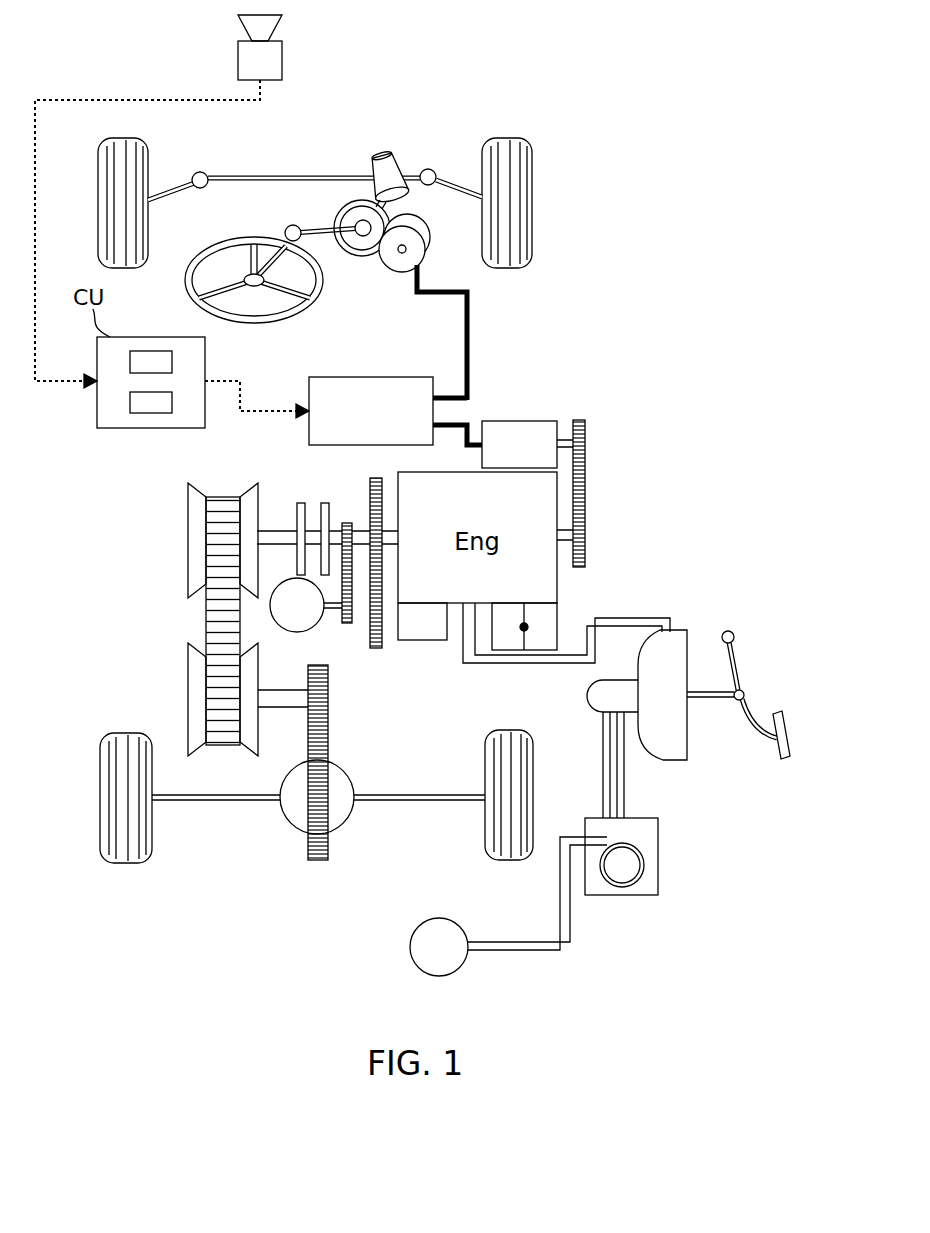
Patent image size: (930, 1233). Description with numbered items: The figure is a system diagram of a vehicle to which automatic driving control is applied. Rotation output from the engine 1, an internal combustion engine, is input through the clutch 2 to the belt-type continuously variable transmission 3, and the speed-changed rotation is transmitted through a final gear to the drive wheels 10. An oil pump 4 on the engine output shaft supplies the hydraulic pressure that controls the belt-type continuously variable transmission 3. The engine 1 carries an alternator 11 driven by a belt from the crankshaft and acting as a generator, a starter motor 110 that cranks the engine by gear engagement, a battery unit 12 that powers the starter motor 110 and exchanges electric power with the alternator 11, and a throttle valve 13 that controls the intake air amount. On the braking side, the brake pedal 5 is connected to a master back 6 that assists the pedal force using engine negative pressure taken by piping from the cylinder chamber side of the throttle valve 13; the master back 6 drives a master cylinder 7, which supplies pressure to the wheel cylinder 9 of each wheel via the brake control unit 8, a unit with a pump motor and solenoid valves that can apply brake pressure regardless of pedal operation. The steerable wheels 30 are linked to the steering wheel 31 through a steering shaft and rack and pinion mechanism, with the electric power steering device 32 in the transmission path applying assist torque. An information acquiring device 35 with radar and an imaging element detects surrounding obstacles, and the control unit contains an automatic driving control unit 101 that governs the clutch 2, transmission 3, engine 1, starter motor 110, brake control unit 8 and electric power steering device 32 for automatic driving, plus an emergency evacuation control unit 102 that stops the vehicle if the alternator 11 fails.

The engine 1 is at (590, 494).
The clutch 2 is at (304, 503).
The belt-type continuously variable transmission 3 is at (168, 500).
The oil pump 4 is at (320, 615).
The brake pedal 5 is at (785, 724).
The master back 6 is at (677, 756).
The master cylinder 7 is at (598, 697).
The brake control unit 8 is at (650, 838).
The wheel cylinder 9 is at (437, 918).
The drive wheels 10 is at (118, 733).
The alternator 11 is at (538, 421).
The battery unit 12 is at (397, 377).
The throttle valve 13 is at (548, 615).
The steerable wheels 30 is at (506, 138).
The steering wheel 31 is at (312, 306).
The electric power steering device 32 is at (448, 252).
The information acquiring device 35 is at (284, 48).
The automatic driving control unit 101 is at (172, 362).
The emergency evacuation control unit 102 is at (130, 404).
The starter motor 110 is at (420, 640).